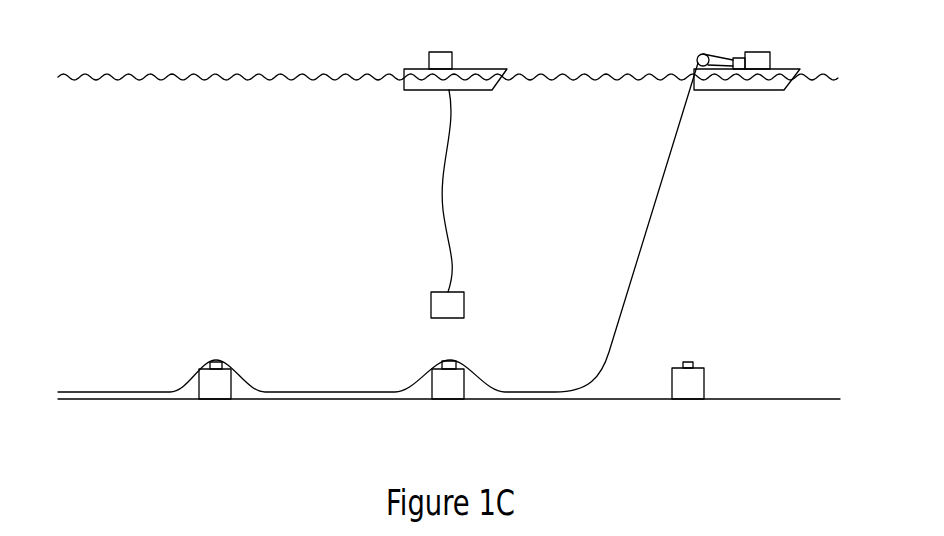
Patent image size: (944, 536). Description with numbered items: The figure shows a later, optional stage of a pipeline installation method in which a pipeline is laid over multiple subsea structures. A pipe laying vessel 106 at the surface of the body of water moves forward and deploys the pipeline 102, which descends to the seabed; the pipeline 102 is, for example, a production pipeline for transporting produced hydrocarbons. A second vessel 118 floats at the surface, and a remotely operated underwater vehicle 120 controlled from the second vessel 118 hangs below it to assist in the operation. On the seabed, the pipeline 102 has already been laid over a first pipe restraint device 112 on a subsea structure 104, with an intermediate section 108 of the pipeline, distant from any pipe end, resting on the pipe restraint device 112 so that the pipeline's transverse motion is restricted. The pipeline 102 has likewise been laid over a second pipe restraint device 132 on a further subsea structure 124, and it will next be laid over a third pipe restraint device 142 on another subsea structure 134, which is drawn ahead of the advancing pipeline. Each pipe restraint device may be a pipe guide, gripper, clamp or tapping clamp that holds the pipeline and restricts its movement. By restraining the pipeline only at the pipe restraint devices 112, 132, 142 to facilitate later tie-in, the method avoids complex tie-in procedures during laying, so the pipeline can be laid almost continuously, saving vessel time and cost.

The pipeline 102 is at (646, 237).
The subsea structure 104 is at (218, 387).
The pipe laying vessel 106 is at (785, 69).
The intermediate section 108 is at (192, 380).
The pipe restraint device 112 is at (220, 364).
The second vessel 118 is at (484, 69).
The remotely operated underwater vehicle 120 is at (440, 305).
The subsea structure 124 is at (450, 387).
The second pipe restraint device 132 is at (453, 365).
The subsea structure 134 is at (688, 386).
The third pipe restraint device 142 is at (691, 365).